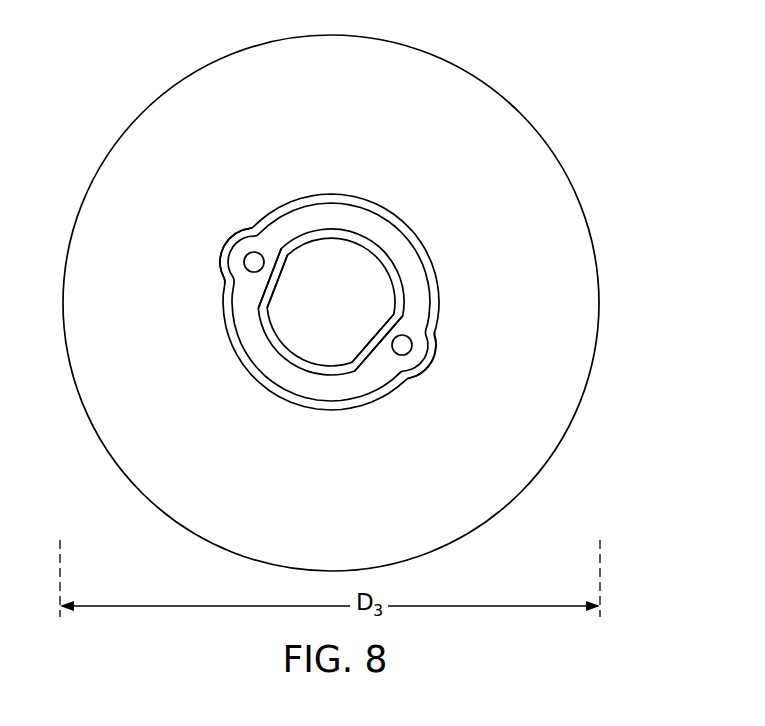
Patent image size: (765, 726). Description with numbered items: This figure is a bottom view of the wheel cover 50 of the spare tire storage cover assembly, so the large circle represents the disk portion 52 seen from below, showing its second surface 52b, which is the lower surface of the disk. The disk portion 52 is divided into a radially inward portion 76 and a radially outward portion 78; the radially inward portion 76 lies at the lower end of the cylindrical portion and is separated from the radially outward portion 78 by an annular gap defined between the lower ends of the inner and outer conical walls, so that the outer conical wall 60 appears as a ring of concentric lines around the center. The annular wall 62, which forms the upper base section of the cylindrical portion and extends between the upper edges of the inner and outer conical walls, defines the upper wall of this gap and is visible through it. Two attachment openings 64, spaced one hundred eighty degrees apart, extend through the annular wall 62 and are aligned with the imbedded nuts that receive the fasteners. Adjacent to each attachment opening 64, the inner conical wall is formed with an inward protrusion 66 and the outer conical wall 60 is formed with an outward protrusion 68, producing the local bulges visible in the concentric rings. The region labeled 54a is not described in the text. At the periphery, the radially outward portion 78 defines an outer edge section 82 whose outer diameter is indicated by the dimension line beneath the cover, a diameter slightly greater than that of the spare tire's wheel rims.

The wheel cover 50 is at (583, 191).
The disk portion 52 is at (545, 362).
The second surface 52b is at (467, 130).
The recessed region 54a is at (305, 217).
The outer conical wall 60 is at (393, 214).
The annular wall 62 is at (255, 343).
The attachment openings 64 is at (252, 263).
The inward protrusions 66 is at (283, 280).
The outward protrusions 68 is at (225, 245).
The radially inward portion 76 is at (367, 289).
The radially outward portion 78 is at (577, 268).
The outer edge section 82 is at (545, 465).